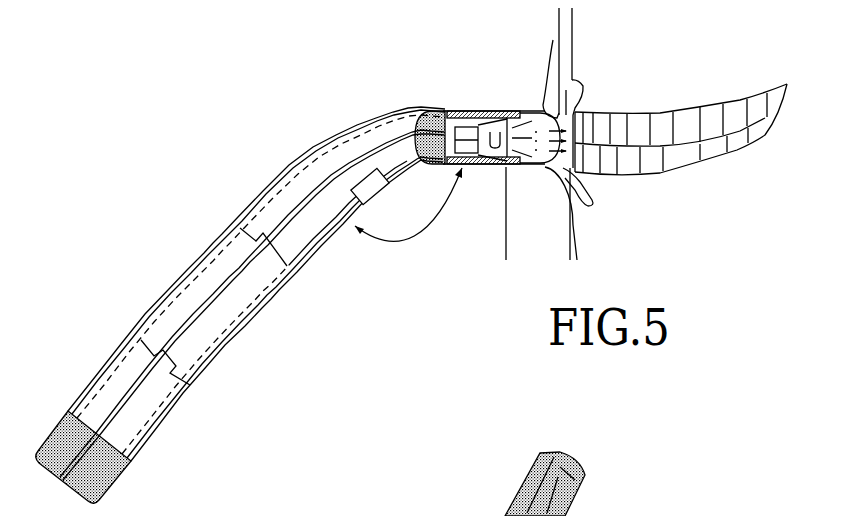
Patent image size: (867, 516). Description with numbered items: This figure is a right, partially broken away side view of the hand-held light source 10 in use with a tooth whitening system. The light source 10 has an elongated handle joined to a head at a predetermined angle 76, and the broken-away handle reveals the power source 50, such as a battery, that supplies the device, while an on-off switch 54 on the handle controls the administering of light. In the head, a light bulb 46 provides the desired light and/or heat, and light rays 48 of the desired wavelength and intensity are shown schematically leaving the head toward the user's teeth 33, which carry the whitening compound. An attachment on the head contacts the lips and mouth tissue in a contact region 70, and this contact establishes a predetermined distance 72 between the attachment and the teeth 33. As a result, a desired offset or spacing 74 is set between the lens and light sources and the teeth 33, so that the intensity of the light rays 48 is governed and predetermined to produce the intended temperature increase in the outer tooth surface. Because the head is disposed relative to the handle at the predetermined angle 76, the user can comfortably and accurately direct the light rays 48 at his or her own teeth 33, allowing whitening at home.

The hand-held light source 10 is at (125, 282).
The teeth 33 is at (683, 158).
The light bulb 46 is at (492, 135).
The light rays 48 is at (548, 149).
The power source 50 is at (158, 413).
The on-off switch 54 is at (389, 190).
The contact region 70 is at (536, 112).
The predetermined distance 72 is at (600, 24).
The offset or spacing 74 is at (506, 242).
The predetermined angle 76 is at (429, 235).